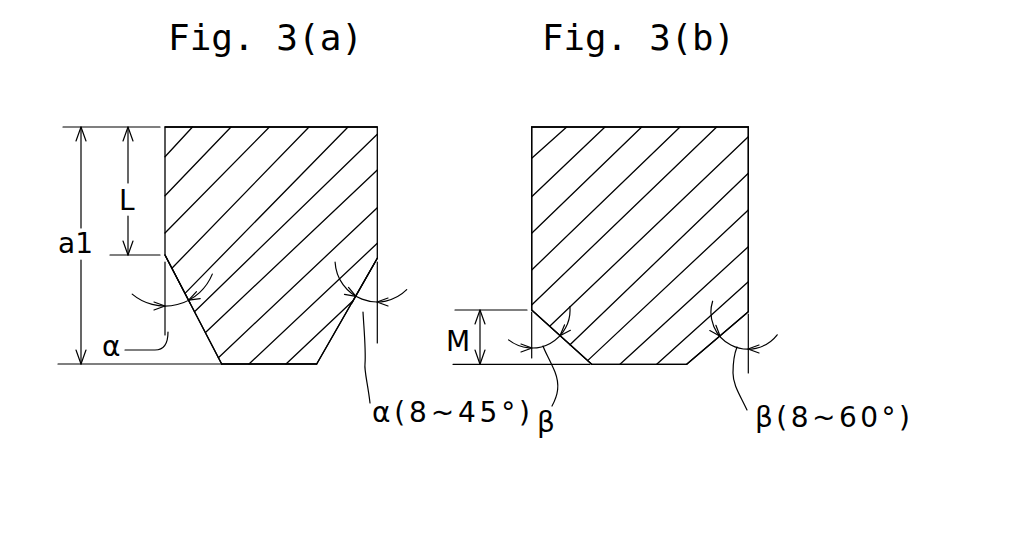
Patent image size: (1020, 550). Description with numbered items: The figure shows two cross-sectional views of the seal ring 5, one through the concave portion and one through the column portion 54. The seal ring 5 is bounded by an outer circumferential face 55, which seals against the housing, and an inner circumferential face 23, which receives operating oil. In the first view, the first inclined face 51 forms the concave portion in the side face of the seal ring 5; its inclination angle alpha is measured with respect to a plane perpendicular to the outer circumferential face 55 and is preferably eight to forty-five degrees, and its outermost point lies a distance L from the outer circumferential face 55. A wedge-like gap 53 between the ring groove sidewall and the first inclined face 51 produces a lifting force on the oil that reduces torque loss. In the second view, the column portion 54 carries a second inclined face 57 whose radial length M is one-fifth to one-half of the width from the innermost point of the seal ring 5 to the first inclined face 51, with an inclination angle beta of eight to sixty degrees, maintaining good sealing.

The seal ring 5 is at (323, 128).
In FIG. 3b, the seal ring 5 is at (693, 128).
The outer circumferential face 55 is at (240, 127).
In FIG. 3b, the outer circumferential face 55 is at (612, 127).
The first inclined face 51 is at (199, 328).
The wedge-like gap 53 is at (181, 313).
The inner circumferential face 23 is at (255, 366).
In FIG. 3b, the inner circumferential face 23 is at (635, 367).
In FIG. 3b, the column portion 54 is at (530, 237).
In FIG. 3b, the second inclined face 57 is at (565, 348).